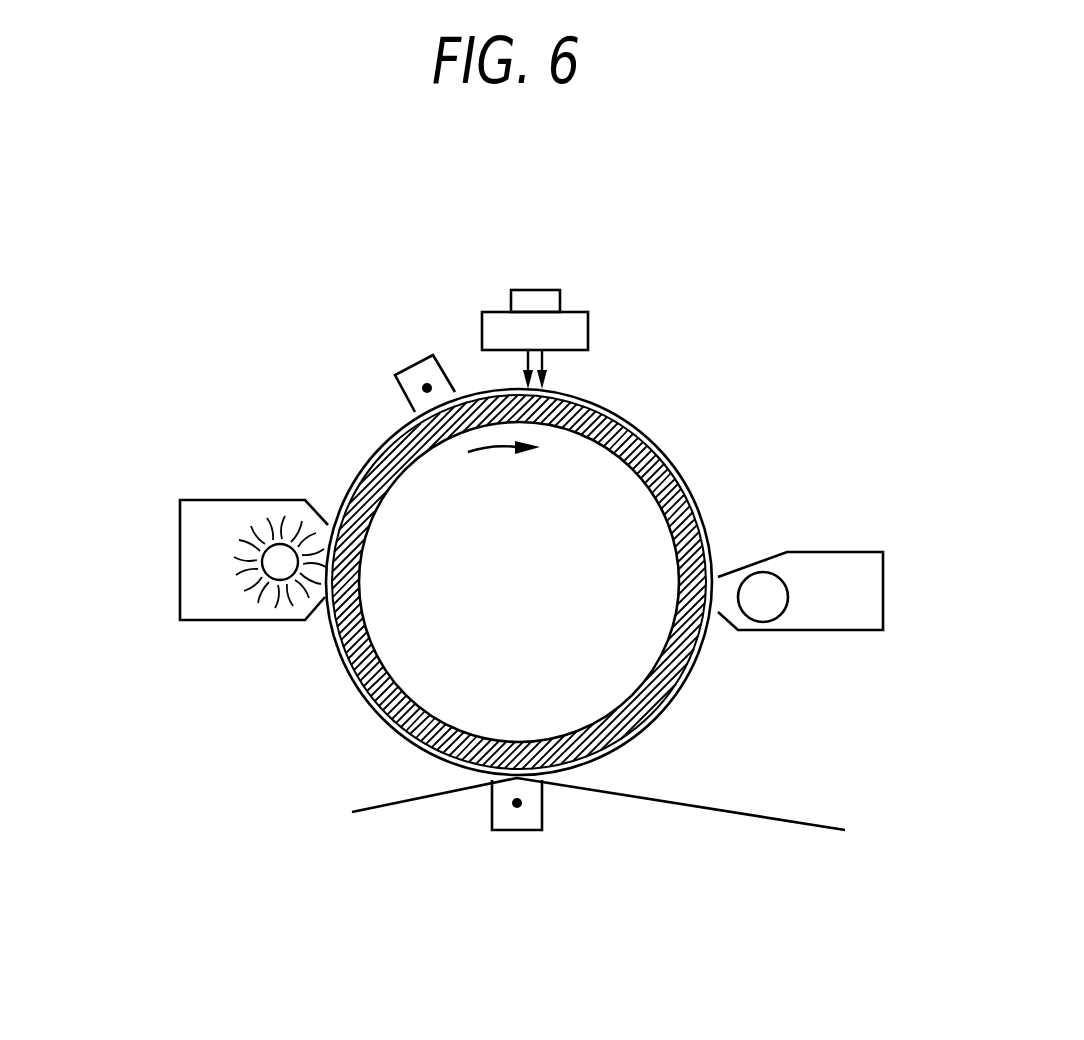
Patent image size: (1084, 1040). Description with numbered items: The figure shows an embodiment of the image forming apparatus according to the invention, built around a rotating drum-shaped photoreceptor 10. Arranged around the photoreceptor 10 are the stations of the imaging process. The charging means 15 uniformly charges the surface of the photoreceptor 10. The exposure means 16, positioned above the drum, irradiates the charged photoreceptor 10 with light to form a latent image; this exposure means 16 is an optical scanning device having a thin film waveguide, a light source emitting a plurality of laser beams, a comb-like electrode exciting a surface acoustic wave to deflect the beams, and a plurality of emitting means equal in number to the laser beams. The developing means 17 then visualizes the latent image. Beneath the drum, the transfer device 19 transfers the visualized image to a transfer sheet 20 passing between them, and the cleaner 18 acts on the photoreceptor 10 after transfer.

The photoreceptor 10 is at (672, 466).
The charging means 15 is at (395, 378).
The exposure means 16 is at (588, 330).
The developing means 17 is at (855, 552).
The cleaner 18 is at (180, 590).
The transfer device 19 is at (492, 820).
The transfer sheet 20 is at (772, 818).